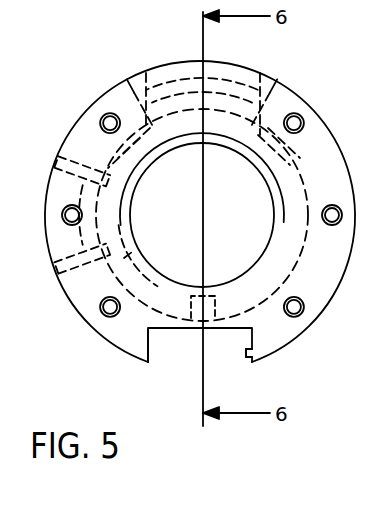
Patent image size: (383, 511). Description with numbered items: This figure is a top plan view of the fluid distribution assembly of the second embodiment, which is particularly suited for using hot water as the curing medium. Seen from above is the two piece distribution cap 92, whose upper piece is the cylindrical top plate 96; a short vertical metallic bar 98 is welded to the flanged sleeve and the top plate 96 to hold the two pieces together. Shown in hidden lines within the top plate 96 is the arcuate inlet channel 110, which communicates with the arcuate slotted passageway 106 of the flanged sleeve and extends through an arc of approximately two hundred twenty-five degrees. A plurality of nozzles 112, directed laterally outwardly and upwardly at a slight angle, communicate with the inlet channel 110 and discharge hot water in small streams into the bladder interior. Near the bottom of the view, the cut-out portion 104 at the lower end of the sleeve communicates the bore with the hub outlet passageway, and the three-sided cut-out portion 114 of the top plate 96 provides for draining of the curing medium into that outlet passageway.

The two piece distribution cap 92 is at (112, 76).
The cylindrical top plate 96 is at (292, 340).
The short vertical metallic bar 98 is at (246, 354).
The cut-out portion 104 is at (205, 292).
The arcuate slotted passageway 106 is at (186, 66).
The arcuate inlet channel 110 is at (130, 238).
The nozzles 112 is at (54, 163).
The three-sided cut-out portion 114 is at (152, 345).